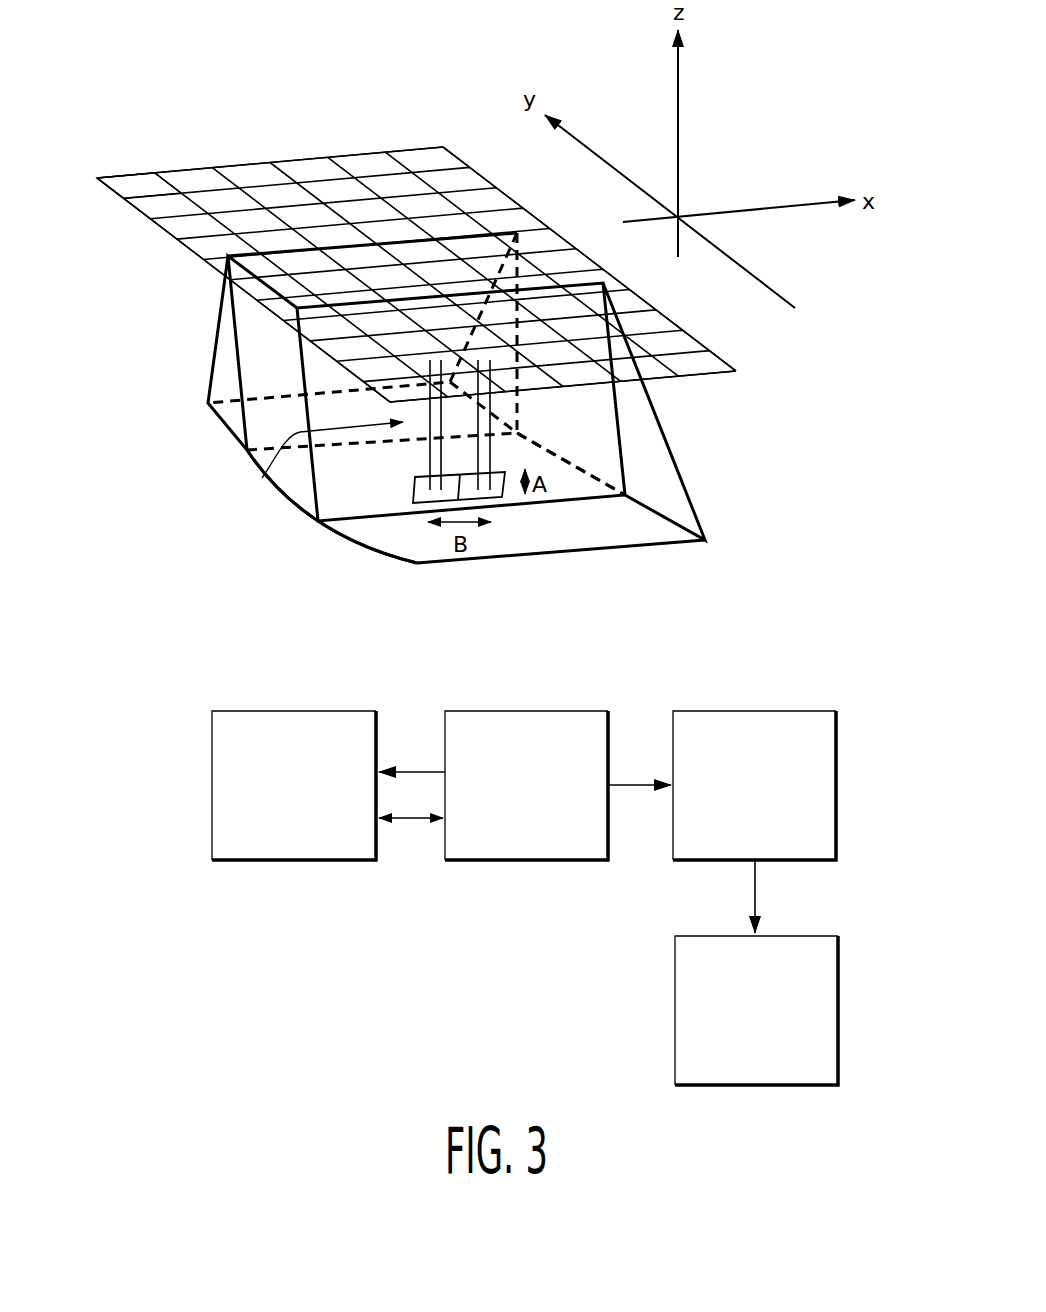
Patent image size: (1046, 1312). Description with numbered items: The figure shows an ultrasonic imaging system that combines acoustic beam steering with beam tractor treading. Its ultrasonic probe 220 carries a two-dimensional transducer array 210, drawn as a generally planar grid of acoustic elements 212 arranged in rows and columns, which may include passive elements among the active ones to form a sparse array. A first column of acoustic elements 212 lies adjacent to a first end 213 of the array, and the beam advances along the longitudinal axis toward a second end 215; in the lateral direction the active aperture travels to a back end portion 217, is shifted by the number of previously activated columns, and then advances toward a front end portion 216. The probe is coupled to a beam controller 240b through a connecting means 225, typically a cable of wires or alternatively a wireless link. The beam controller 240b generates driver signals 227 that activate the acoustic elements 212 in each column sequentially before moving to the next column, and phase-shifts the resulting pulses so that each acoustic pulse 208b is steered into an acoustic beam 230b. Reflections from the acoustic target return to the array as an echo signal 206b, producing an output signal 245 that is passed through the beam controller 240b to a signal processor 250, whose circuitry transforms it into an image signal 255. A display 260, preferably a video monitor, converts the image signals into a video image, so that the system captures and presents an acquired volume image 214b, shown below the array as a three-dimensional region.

The two-dimensional transducer array 210 is at (298, 103).
The acoustic elements 212 is at (185, 180).
The first end 213 is at (152, 222).
The back end portion 217 is at (387, 152).
The second end 215 is at (713, 340).
The front end portion 216 is at (667, 378).
The acquired volume image 214b is at (668, 492).
The echo signal 206b is at (517, 433).
The acoustic pulse 208b is at (517, 435).
The acoustic beam 230b is at (262, 478).
The ultrasonic probe 220 is at (297, 710).
The driver signals 227 is at (412, 768).
The connecting means 225 is at (410, 822).
The beam controller 240b is at (548, 710).
The signal processor 250 is at (772, 710).
The output signal 245 is at (633, 790).
The image signal 255 is at (755, 907).
The display 260 is at (675, 986).